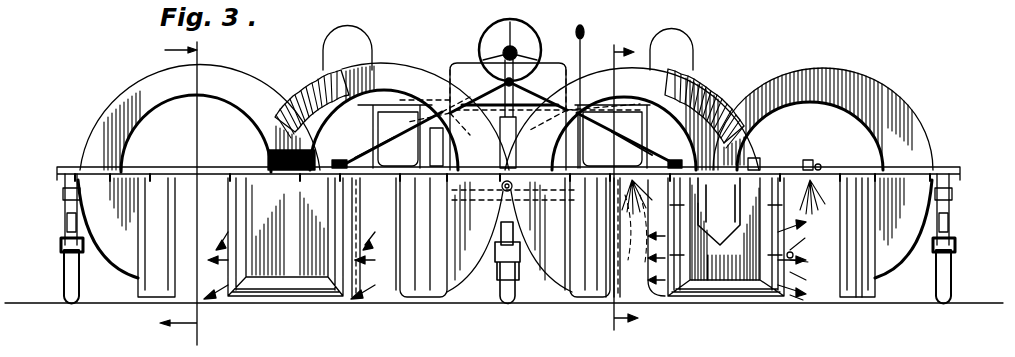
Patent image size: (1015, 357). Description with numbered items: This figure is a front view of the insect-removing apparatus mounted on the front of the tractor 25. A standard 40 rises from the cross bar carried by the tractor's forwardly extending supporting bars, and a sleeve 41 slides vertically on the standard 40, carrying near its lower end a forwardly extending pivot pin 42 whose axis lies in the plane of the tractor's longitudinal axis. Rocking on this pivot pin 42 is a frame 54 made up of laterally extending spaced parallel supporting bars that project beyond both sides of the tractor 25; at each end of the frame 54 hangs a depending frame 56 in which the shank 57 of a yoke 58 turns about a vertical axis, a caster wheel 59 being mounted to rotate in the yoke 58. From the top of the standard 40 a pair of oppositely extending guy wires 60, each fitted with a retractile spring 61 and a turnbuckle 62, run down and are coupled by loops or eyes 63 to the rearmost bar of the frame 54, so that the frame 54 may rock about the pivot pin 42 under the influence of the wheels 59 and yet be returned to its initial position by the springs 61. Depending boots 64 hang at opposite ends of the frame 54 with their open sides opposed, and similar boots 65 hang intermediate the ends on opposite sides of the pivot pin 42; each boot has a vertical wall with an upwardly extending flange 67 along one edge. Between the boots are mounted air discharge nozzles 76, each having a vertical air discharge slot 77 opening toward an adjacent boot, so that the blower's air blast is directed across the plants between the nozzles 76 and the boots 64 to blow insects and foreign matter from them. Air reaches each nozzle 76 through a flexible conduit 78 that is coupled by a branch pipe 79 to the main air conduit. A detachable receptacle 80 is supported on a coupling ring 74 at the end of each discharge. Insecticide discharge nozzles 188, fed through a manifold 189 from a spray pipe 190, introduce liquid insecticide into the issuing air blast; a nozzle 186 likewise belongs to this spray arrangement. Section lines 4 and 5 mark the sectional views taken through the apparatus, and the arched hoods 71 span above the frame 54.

The section line 4- 4 is at (187, 193).
The section line 5- 5 is at (617, 185).
The tractor 25 is at (547, 48).
The standard 40 is at (514, 84).
The sleeve 41 is at (513, 128).
The pivot pin 42 is at (505, 190).
The frame 54 is at (857, 173).
The depending frame 56 is at (64, 193).
The shank 57 is at (66, 222).
The yoke 58 is at (60, 242).
The caster wheel 59 is at (66, 262).
The guy wires 60 is at (487, 93).
The retractile springs 61 is at (420, 122).
The turnbuckles 62 is at (368, 140).
The loops or eyes 63 is at (338, 162).
The boots 64 is at (137, 279).
The boots 65 is at (440, 285).
The flange 67 is at (428, 275).
The arched hood 71 is at (100, 128).
The coupling ring 74 is at (270, 152).
The air discharge nozzles 76 is at (290, 266).
The air discharge slot 77 is at (228, 232).
The flexible conduit 78 is at (308, 84).
The branch pipe 79 is at (583, 36).
The receptacle 80 is at (755, 168).
The spray nozzle 186 is at (795, 255).
The discharge nozzles 188 is at (796, 300).
The manifold 189 is at (726, 223).
The spray pipe 190 is at (799, 168).